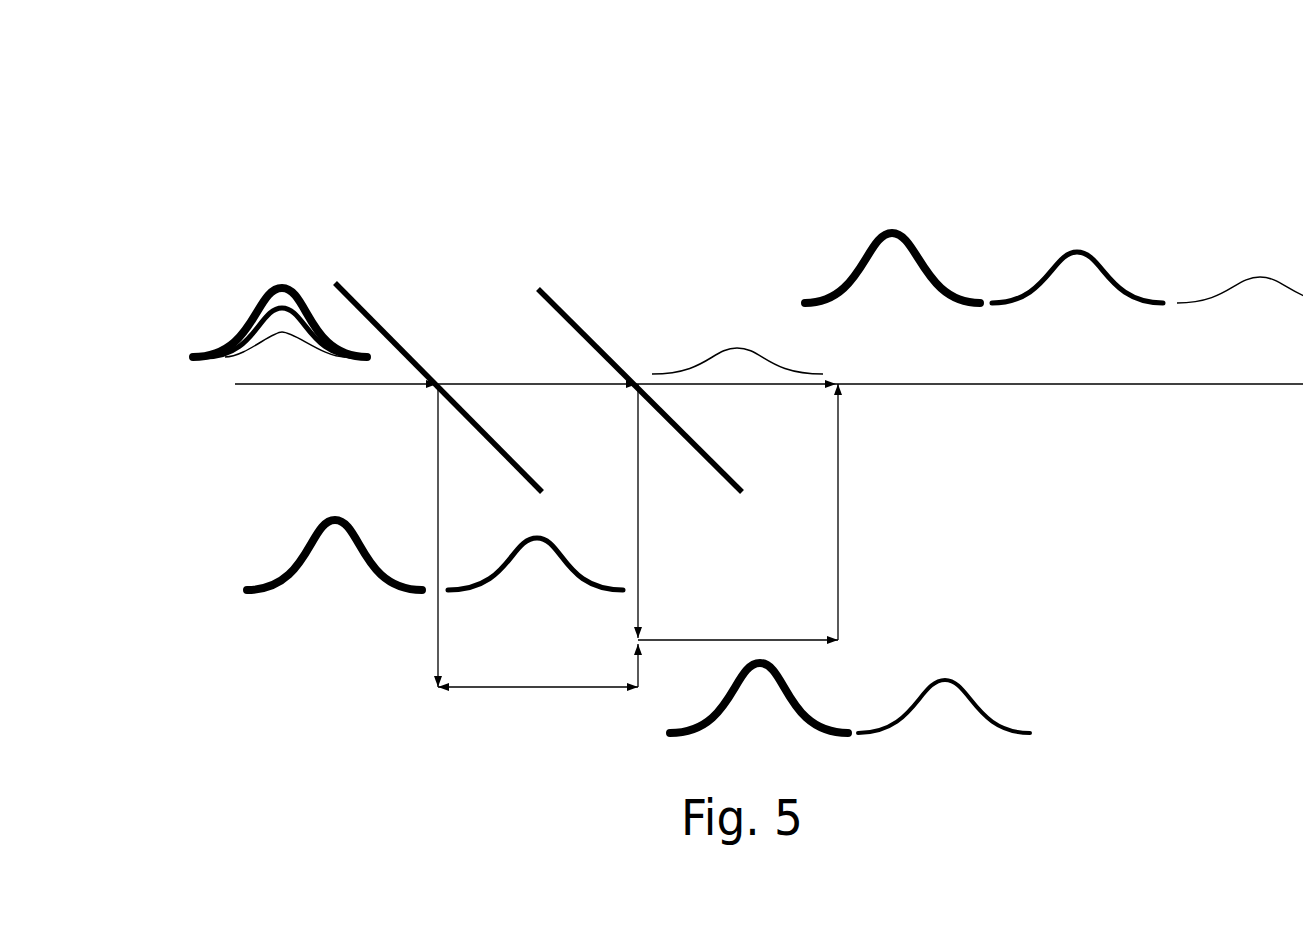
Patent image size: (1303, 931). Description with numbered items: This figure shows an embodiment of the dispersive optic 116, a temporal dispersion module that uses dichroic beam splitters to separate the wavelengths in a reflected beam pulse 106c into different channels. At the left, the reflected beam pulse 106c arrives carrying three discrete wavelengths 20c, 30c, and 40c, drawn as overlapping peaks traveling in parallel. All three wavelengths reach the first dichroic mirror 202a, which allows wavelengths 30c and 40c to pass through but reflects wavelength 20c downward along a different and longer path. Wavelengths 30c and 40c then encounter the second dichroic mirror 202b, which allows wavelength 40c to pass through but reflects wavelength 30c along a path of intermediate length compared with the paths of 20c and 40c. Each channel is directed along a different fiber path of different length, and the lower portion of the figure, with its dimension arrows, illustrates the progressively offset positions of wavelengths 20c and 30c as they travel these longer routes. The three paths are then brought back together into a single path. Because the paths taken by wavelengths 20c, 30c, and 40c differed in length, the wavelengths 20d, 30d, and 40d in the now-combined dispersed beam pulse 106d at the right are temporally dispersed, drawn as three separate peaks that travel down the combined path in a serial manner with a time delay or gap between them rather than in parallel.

The dispersive optic 116 is at (760, 121).
The reflected beam pulse 106c is at (148, 332).
The dispersed beam pulse 106d is at (1095, 355).
The first wavelength 20c is at (313, 313).
The second wavelength 30c is at (256, 298).
The third wavelength 40c is at (290, 334).
The first dispersed wavelength 20d is at (892, 277).
The second dispersed wavelength 30d is at (1077, 287).
The third dispersed wavelength 40d is at (1240, 296).
The first dichroic mirror 202a is at (360, 307).
The second dichroic mirror 202b is at (560, 308).